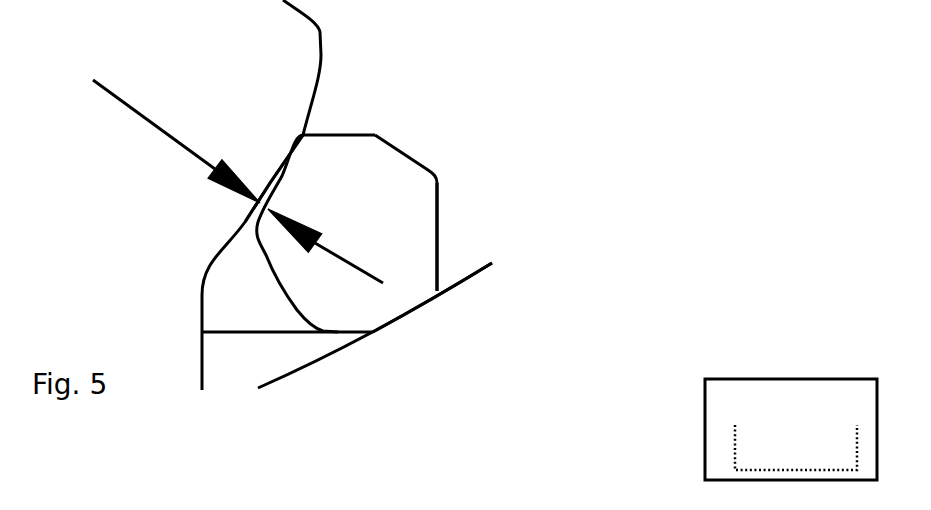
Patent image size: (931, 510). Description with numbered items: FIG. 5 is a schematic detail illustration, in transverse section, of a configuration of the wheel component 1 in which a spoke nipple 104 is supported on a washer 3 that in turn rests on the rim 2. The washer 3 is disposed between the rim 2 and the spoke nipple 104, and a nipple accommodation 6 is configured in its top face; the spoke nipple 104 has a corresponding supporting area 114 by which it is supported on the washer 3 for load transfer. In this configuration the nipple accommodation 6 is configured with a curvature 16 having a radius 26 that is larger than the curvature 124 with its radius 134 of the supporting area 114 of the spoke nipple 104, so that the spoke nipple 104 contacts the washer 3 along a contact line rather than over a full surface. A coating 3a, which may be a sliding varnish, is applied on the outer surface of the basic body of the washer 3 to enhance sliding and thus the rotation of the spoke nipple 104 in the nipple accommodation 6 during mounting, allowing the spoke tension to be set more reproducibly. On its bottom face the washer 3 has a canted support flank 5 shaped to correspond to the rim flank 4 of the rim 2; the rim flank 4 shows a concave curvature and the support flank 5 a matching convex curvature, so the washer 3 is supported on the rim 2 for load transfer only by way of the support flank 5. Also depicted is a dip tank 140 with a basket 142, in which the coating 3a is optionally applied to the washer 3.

The wheel component 1 is at (85, 39).
The spoke nipple 104 is at (323, 67).
The supporting area 114 is at (283, 164).
The radius 134 is at (178, 143).
The curvature 124 is at (230, 212).
The curvature 16 is at (290, 197).
The radius 26 is at (367, 273).
The washer 3 is at (411, 148).
The coating 3a is at (439, 237).
The nipple accommodation 6 is at (298, 162).
The support flank 5 is at (412, 308).
The rim 2 is at (479, 279).
The rim flank 4 is at (393, 319).
The dip tank 140 is at (717, 400).
The basket 142 is at (757, 456).